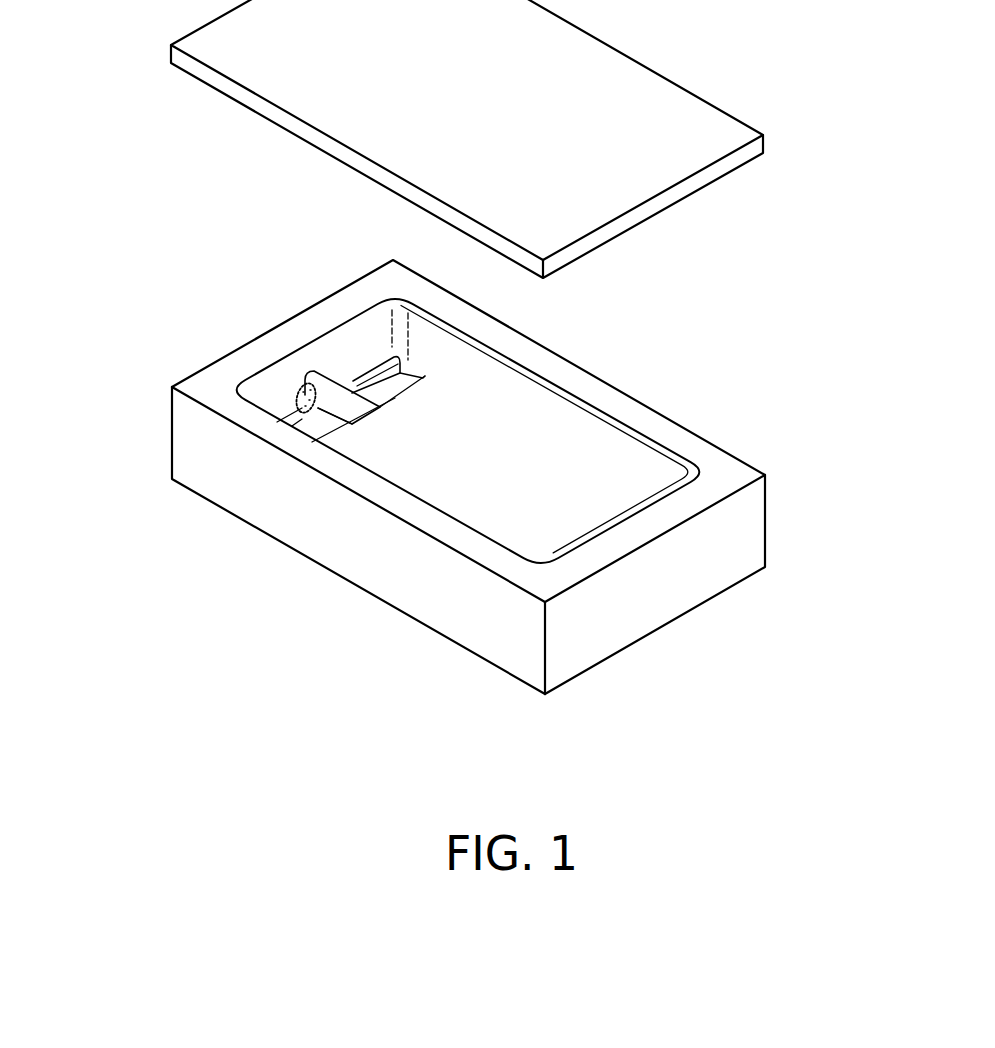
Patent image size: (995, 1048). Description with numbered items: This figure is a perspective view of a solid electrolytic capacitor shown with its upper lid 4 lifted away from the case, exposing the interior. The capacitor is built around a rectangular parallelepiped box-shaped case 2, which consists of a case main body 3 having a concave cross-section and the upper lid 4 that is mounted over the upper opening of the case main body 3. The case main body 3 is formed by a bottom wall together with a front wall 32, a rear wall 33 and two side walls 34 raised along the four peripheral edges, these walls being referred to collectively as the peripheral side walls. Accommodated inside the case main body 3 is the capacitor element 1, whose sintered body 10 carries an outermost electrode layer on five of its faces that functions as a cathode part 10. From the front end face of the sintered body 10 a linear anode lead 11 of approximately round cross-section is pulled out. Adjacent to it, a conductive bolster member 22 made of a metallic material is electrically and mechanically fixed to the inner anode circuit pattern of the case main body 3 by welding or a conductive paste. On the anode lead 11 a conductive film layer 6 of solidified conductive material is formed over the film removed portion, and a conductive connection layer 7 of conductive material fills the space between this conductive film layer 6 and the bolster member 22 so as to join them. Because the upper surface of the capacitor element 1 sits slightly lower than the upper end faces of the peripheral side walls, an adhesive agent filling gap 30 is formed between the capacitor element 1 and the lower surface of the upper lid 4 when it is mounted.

The capacitor element 1 is at (626, 458).
The box-shaped case 2 is at (128, 143).
The case main body 3 is at (209, 326).
The upper lid 4 is at (208, 110).
The conductive film layer 6 is at (303, 385).
The conductive connection layer 7 is at (300, 404).
The sintered body / cathode part 10 is at (572, 423).
The anode lead 11 is at (330, 395).
The conductive bolster member 22 is at (373, 372).
The adhesive agent filling gap 30 is at (678, 460).
The front wall 32 is at (278, 338).
The rear wall 33 is at (640, 613).
The side walls 34 is at (577, 373).